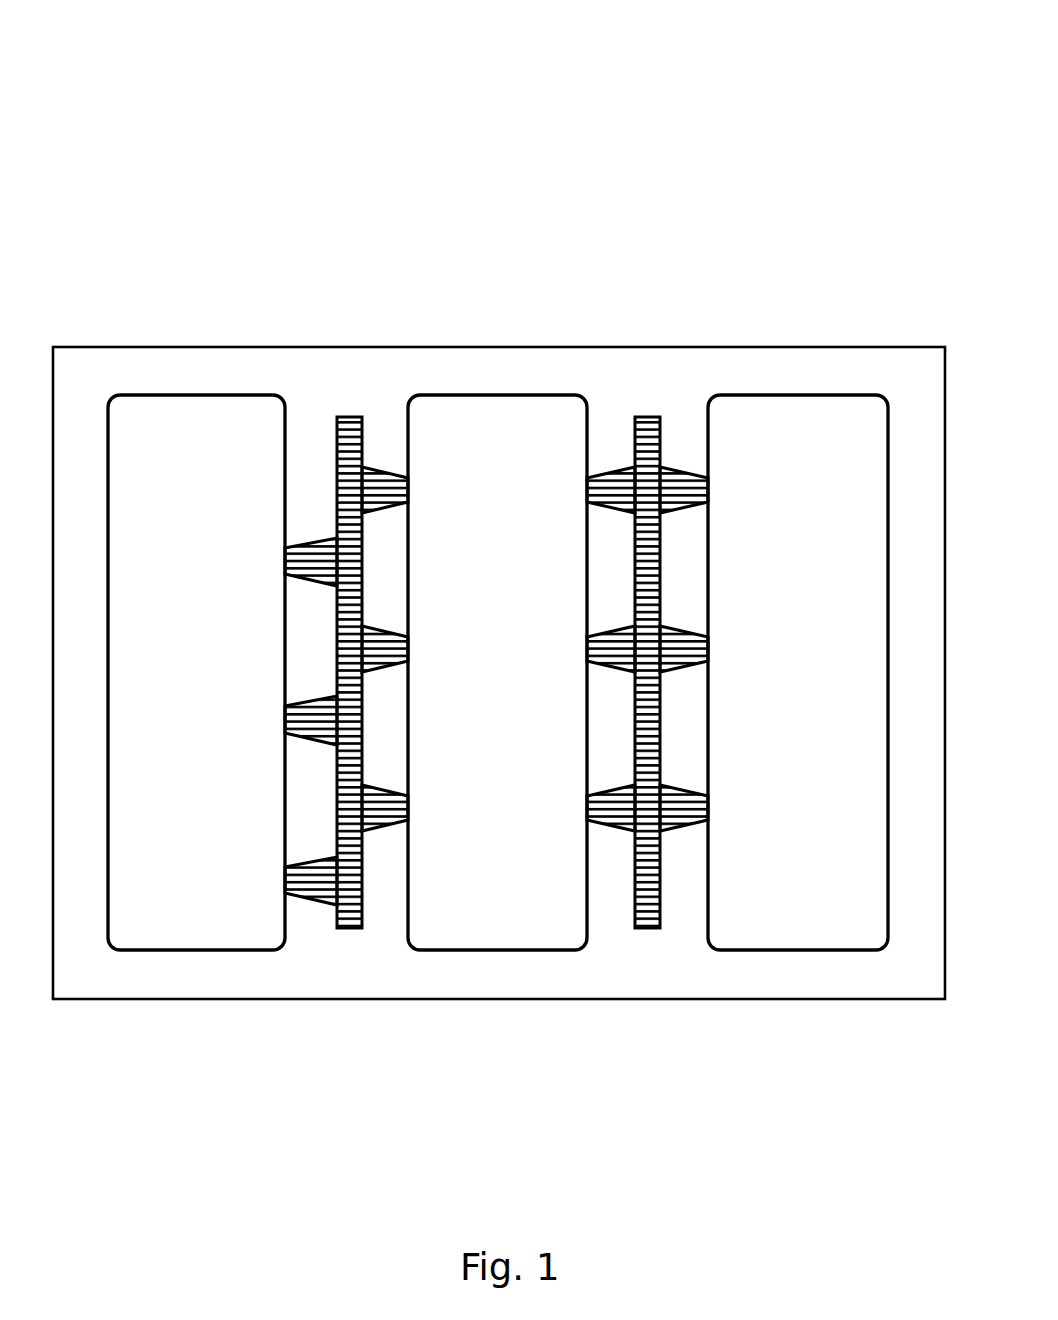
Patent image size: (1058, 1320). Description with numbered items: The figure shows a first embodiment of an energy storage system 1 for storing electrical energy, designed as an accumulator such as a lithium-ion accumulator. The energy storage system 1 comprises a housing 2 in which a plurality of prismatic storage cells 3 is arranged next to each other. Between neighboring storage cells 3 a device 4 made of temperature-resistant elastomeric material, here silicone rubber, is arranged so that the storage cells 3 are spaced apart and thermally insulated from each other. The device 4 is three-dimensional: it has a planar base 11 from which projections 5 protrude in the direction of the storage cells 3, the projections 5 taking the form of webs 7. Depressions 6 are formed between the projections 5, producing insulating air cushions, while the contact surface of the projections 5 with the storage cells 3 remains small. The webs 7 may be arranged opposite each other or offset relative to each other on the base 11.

The energy storage system 1 is at (607, 238).
The housing 2 is at (670, 345).
The storage cell 3 is at (807, 437).
The device 4 is at (343, 485).
The projection 5 is at (382, 490).
The depression 6 is at (307, 638).
The web 7 is at (305, 880).
The planar base 11 is at (511, 664).